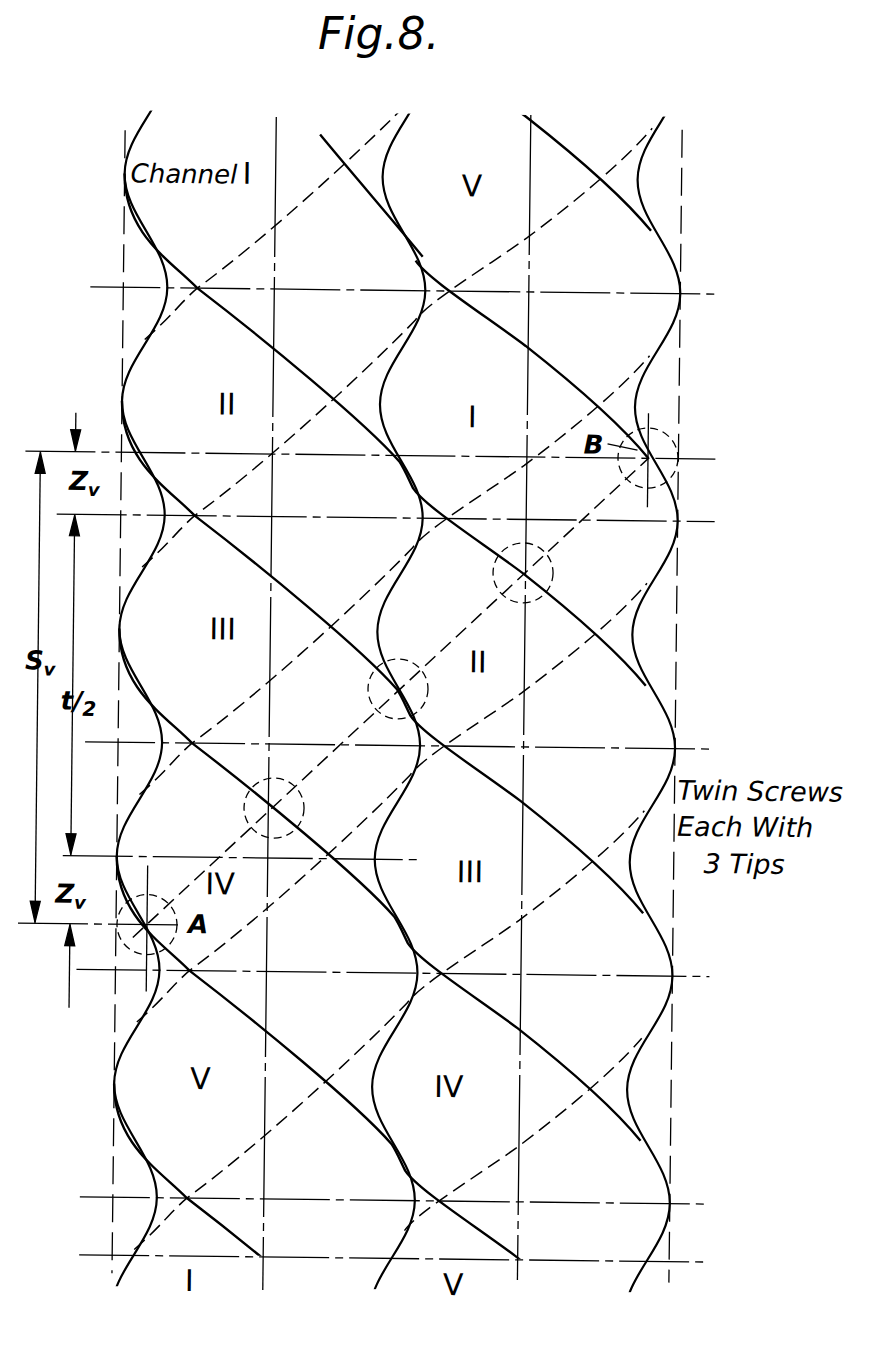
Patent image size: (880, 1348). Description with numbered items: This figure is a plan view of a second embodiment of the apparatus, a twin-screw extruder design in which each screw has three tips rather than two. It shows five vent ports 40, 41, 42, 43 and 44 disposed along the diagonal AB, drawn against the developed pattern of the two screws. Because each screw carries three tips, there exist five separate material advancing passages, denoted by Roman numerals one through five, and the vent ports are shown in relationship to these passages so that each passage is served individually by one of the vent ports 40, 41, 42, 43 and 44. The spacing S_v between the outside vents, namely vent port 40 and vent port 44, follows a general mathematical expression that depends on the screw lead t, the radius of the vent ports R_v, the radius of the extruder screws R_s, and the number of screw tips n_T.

The vent port 40 is at (131, 954).
The vent port 41 is at (242, 822).
The vent port 42 is at (430, 702).
The vent port 43 is at (510, 536).
The vent port 44 is at (668, 424).